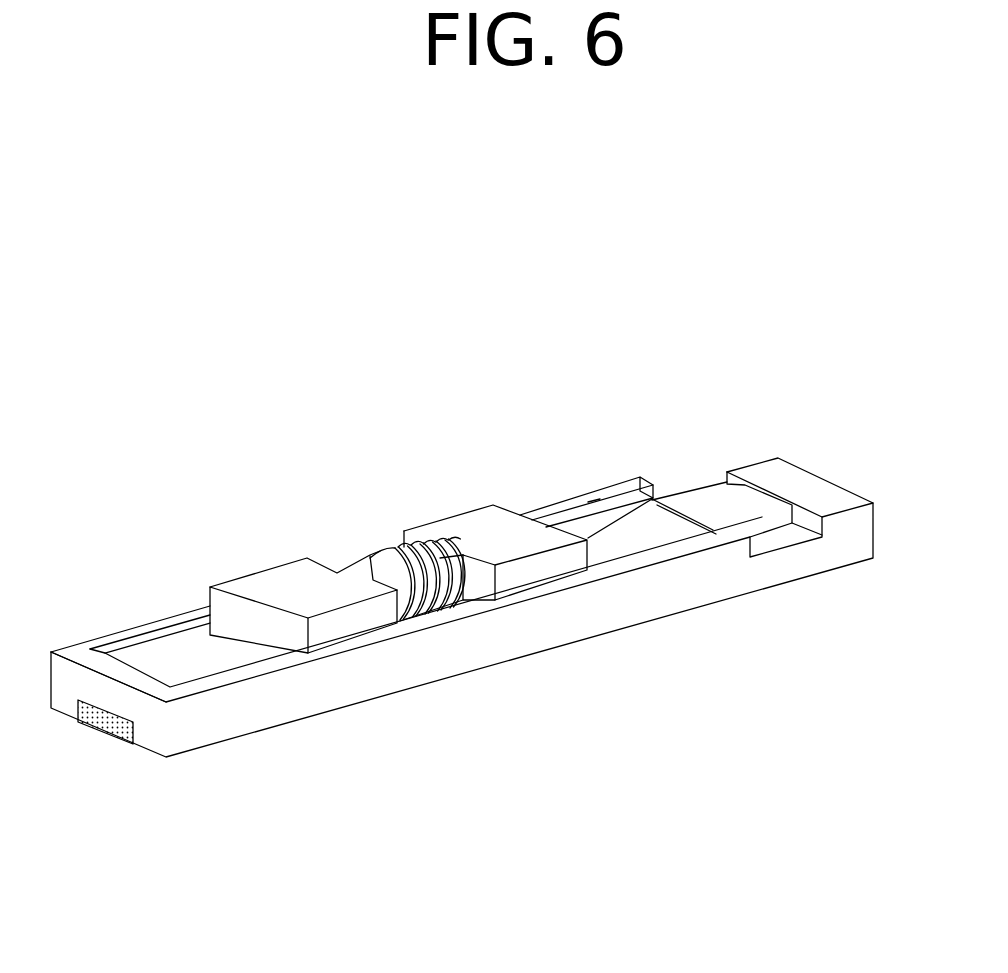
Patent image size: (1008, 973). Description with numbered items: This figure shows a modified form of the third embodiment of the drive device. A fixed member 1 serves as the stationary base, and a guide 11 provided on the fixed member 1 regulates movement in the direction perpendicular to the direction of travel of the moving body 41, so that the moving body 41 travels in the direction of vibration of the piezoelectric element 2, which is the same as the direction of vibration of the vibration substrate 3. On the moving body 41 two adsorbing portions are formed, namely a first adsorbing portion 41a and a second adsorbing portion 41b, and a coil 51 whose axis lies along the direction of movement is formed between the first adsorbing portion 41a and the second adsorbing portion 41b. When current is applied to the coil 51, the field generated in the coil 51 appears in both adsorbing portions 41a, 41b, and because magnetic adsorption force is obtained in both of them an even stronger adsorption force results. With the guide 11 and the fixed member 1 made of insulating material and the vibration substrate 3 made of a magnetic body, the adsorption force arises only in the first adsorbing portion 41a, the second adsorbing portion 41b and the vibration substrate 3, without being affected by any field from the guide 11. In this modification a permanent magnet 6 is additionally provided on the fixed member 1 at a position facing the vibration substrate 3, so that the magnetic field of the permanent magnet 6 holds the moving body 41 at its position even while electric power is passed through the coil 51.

The fixed member 1 is at (815, 492).
The guide 11 is at (163, 620).
The piezoelectric element 2 is at (727, 507).
The vibration substrate 3 is at (648, 550).
The moving body 41 is at (472, 611).
The first adsorbing portion 41a is at (347, 628).
The second adsorbing portion 41b is at (548, 572).
The coil 51 is at (398, 547).
The permanent magnet 6 is at (108, 720).